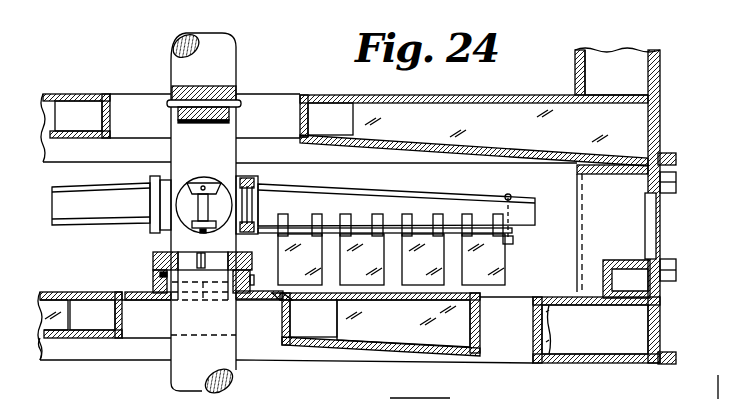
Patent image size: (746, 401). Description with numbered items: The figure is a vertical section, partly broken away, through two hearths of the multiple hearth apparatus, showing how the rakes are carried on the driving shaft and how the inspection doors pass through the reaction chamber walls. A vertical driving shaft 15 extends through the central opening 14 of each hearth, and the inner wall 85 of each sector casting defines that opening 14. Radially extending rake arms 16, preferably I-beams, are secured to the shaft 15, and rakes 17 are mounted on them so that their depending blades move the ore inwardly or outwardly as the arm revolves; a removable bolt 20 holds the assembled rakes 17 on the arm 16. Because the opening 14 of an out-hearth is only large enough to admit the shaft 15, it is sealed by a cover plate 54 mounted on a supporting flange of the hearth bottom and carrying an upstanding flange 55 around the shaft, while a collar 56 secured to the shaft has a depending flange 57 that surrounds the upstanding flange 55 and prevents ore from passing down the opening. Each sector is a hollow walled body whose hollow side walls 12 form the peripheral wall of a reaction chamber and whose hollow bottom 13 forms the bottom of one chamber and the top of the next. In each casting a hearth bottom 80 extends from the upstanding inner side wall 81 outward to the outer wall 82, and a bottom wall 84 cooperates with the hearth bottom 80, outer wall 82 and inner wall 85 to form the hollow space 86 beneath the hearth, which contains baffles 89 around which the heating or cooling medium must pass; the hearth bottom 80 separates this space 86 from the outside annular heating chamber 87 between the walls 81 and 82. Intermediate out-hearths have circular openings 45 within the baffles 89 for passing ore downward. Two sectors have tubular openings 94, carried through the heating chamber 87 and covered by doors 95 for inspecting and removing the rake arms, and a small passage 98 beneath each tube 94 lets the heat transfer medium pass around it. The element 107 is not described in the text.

The hollow side wall 12 is at (664, 122).
The hollow bottom of hearth 13 is at (367, 150).
The central opening 14 is at (205, 216).
The vertical driving shaft 15 is at (192, 38).
The rake arm 16 is at (293, 205).
The rake 17 is at (391, 249).
The removable bolt 20 is at (505, 197).
The circular opening 45 is at (570, 330).
The cover plate 54 is at (148, 292).
The upstanding flange 55 is at (247, 288).
The collar 56 is at (163, 251).
The depending flange 57 is at (158, 275).
The hearth bottom 80 is at (95, 93).
The upstanding inner side wall 81 is at (575, 67).
The outer wall 82 is at (660, 76).
The bottom wall 84 is at (72, 139).
The inner wall 85 is at (112, 115).
The hollow space 86 is at (344, 227).
The outside annular heating chamber 87 is at (617, 71).
The baffle 89 is at (38, 292).
The opening 94 is at (612, 228).
The door 95 is at (661, 221).
The small passage 98 is at (626, 279).
The bracket 107 is at (677, 160).